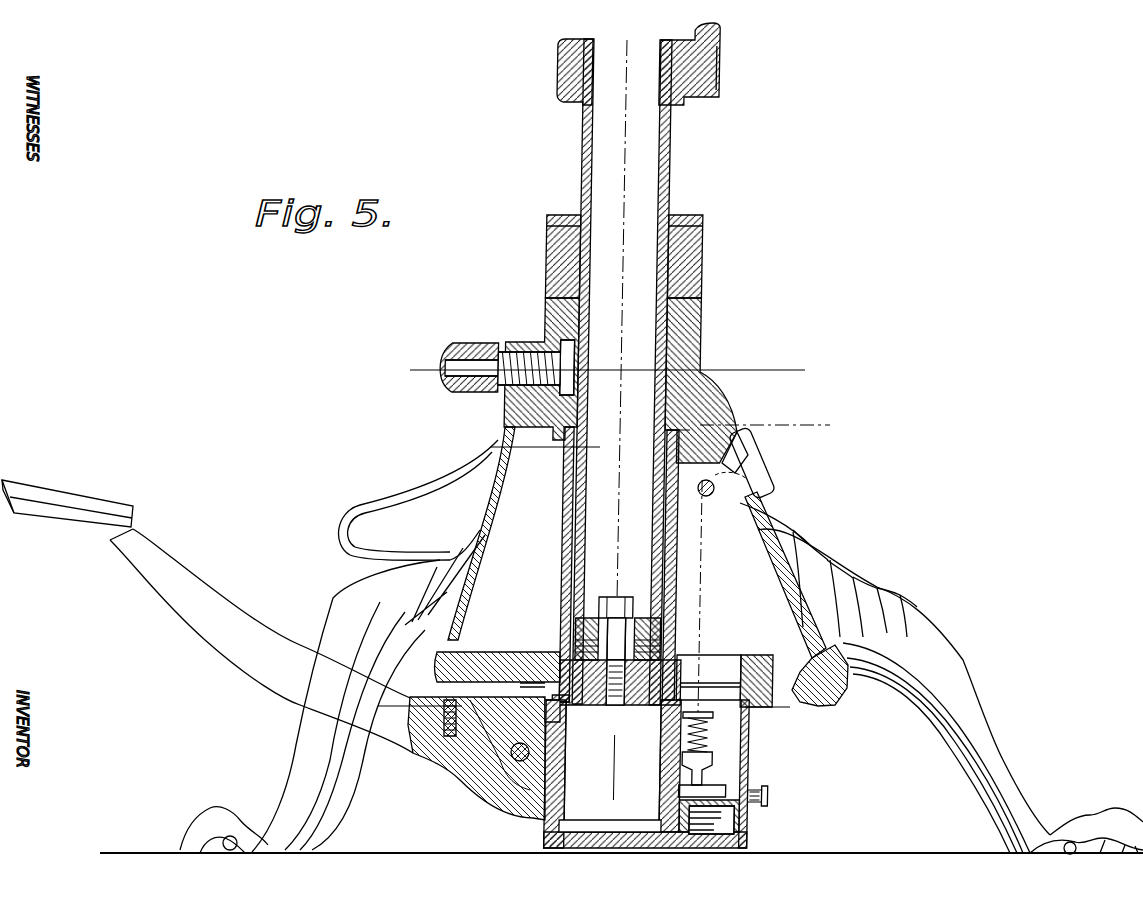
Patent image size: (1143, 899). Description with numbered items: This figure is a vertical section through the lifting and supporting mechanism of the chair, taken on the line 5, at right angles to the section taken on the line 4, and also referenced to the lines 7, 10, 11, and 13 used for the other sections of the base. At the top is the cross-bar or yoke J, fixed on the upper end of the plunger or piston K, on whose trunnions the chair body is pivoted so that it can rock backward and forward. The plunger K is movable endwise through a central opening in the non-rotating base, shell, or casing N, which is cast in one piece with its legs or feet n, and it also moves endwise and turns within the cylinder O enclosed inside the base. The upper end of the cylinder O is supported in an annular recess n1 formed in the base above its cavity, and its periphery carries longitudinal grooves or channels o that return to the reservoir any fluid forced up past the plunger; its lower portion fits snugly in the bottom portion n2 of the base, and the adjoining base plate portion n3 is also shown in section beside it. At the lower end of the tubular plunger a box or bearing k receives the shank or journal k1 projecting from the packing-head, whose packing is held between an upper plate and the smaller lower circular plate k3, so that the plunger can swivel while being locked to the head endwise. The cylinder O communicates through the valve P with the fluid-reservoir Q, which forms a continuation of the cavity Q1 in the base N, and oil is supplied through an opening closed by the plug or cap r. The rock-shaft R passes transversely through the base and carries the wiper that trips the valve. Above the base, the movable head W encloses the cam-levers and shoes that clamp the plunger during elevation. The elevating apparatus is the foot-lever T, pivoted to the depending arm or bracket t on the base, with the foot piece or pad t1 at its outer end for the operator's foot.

The section line 4 4 is at (620, 417).
The cross-bar or yoke J is at (704, 70).
The plunger or piston K is at (648, 168).
The movable head W is at (683, 268).
The section line 7 7 is at (705, 398).
The section line 5 5 is at (506, 352).
The section line 10 10 is at (596, 372).
The section line 11 11 is at (665, 437).
The cylinder O is at (564, 488).
The cavity Q1 is at (433, 533).
The plug or cap r is at (745, 462).
The rock-shaft R is at (709, 498).
The base, shell, or casing N is at (762, 532).
The legs or feet n is at (661, 691).
The annular recess n1 is at (687, 429).
The box or bearing k is at (618, 617).
The shank or journal k1 is at (615, 628).
The base plate n3 is at (604, 679).
The bottom portion of the base n2 is at (708, 677).
The section line 13 13 is at (571, 717).
The depending arm or bracket t is at (484, 758).
The foot-lever T is at (261, 641).
The foot piece or pad t1 is at (67, 498).
The lower circular plate k3 is at (647, 774).
The fluid-reservoir Q is at (709, 791).
The longitudinal grooves, ducts, or channels o is at (668, 703).
The valve P is at (752, 786).